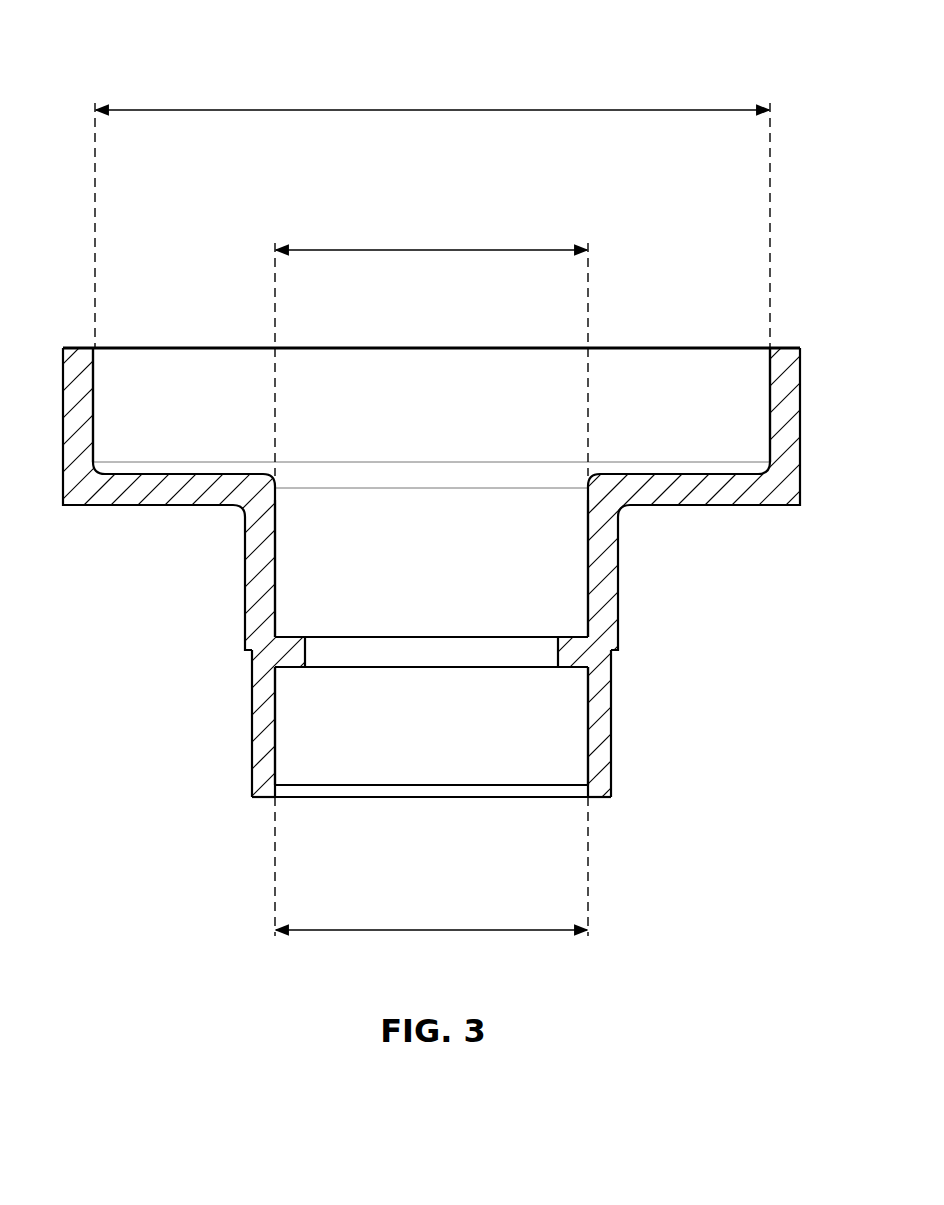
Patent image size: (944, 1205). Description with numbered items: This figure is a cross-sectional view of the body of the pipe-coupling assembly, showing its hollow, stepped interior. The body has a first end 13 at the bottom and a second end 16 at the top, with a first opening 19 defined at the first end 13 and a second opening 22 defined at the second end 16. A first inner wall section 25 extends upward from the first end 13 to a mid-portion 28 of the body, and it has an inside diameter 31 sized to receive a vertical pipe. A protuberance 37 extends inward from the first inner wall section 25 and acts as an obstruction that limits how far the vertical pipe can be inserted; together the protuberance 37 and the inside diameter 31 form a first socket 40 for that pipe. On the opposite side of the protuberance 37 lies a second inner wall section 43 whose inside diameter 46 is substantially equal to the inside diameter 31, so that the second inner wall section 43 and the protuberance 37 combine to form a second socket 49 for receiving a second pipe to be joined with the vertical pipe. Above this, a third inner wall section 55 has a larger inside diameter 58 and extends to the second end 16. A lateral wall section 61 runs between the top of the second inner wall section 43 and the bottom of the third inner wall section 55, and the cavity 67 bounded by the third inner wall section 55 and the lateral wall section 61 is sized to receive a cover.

The first end 13 is at (258, 800).
The second end 16 is at (80, 347).
The first opening 19 is at (440, 808).
The second opening 22 is at (428, 340).
The first inner wall section 25 is at (276, 740).
The mid-portion 28 is at (638, 637).
The inside diameter 31 is at (435, 931).
The protuberance 37 is at (305, 658).
The first socket 40 is at (318, 698).
The second inner wall section 43 is at (276, 527).
The inside diameter 46 is at (432, 249).
The second socket 49 is at (444, 599).
The third inner wall section 55 is at (96, 382).
The inside diameter 58 is at (432, 109).
The lateral wall section 61 is at (228, 473).
The cavity 67 is at (748, 432).